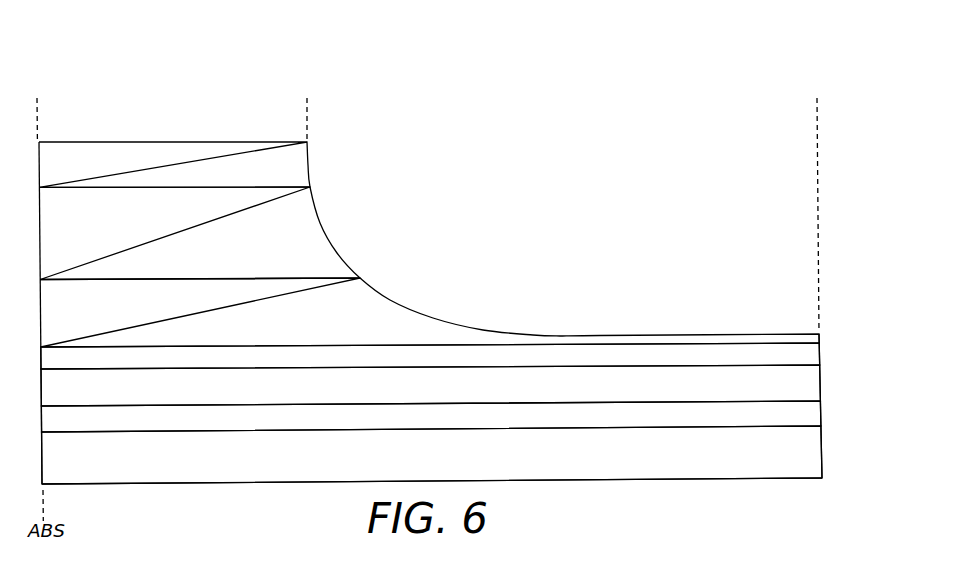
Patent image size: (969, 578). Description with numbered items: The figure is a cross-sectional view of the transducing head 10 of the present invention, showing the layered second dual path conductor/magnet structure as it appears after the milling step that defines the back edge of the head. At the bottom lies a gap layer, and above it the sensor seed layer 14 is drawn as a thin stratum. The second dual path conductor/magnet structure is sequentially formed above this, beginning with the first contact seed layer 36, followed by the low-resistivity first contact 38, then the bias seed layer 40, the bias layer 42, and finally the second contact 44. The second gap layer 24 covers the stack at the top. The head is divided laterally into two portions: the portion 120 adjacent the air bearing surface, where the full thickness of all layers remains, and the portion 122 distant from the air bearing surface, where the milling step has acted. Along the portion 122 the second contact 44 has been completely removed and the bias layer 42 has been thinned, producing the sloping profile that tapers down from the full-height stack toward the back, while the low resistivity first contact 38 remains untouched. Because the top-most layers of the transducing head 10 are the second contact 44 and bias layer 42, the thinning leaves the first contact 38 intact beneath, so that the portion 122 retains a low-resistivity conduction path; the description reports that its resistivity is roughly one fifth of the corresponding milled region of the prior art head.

The transducing head 10 is at (692, 58).
The sensor seed layer 14 is at (89, 466).
The second gap layer 24 is at (89, 176).
The first contact seed layer 36 is at (89, 428).
The first contact 38 is at (89, 398).
The bias seed layer 40 is at (89, 370).
The bias layer 42 is at (89, 320).
The second contact 44 is at (89, 242).
The portion adjacent the air bearing surface 120 is at (307, 110).
The portion distant the air bearing surface 122 is at (817, 108).